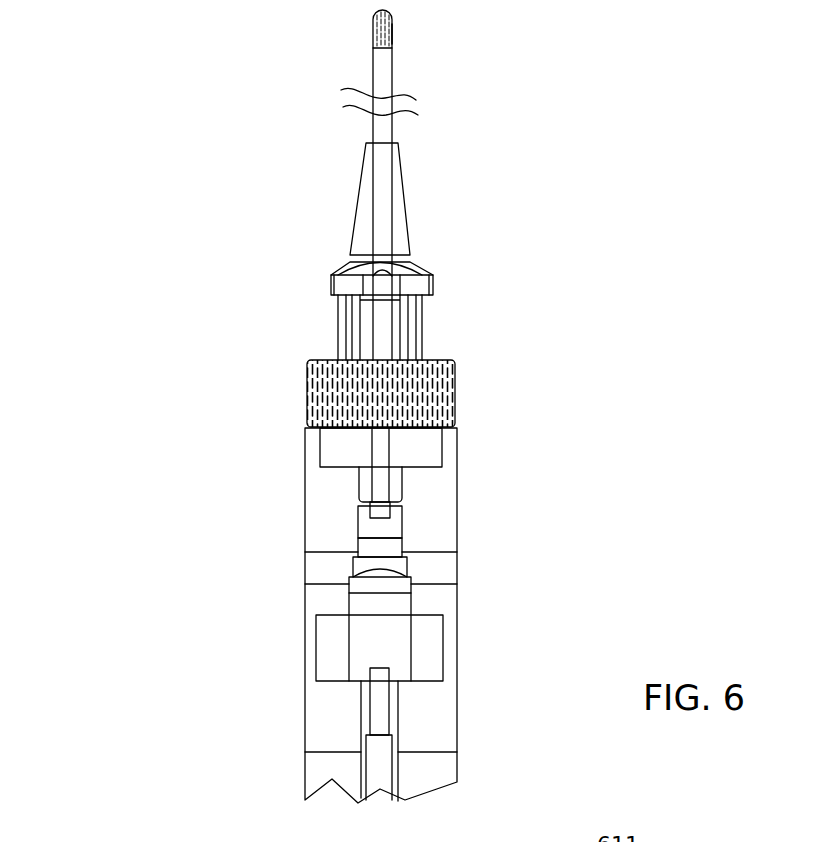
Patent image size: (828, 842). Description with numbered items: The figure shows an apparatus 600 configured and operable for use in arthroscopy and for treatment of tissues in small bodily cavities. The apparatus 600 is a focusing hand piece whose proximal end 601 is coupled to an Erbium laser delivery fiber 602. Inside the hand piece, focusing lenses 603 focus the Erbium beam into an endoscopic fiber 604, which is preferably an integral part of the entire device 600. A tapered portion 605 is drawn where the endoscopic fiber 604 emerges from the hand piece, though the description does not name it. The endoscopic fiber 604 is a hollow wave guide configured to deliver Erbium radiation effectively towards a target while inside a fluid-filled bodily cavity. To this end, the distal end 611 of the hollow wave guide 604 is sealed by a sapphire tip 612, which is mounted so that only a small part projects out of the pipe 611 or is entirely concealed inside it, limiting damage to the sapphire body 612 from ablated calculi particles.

The apparatus 600 is at (158, 682).
The proximal end 601 is at (335, 648).
The Erbium laser delivery fiber 602 is at (378, 717).
The focusing lenses 603 is at (387, 566).
The endoscopic fiber 604 is at (381, 133).
The tapered needle hub 605 is at (397, 228).
The distal end 611 is at (357, 29).
The sapphire tip 612 is at (392, 22).